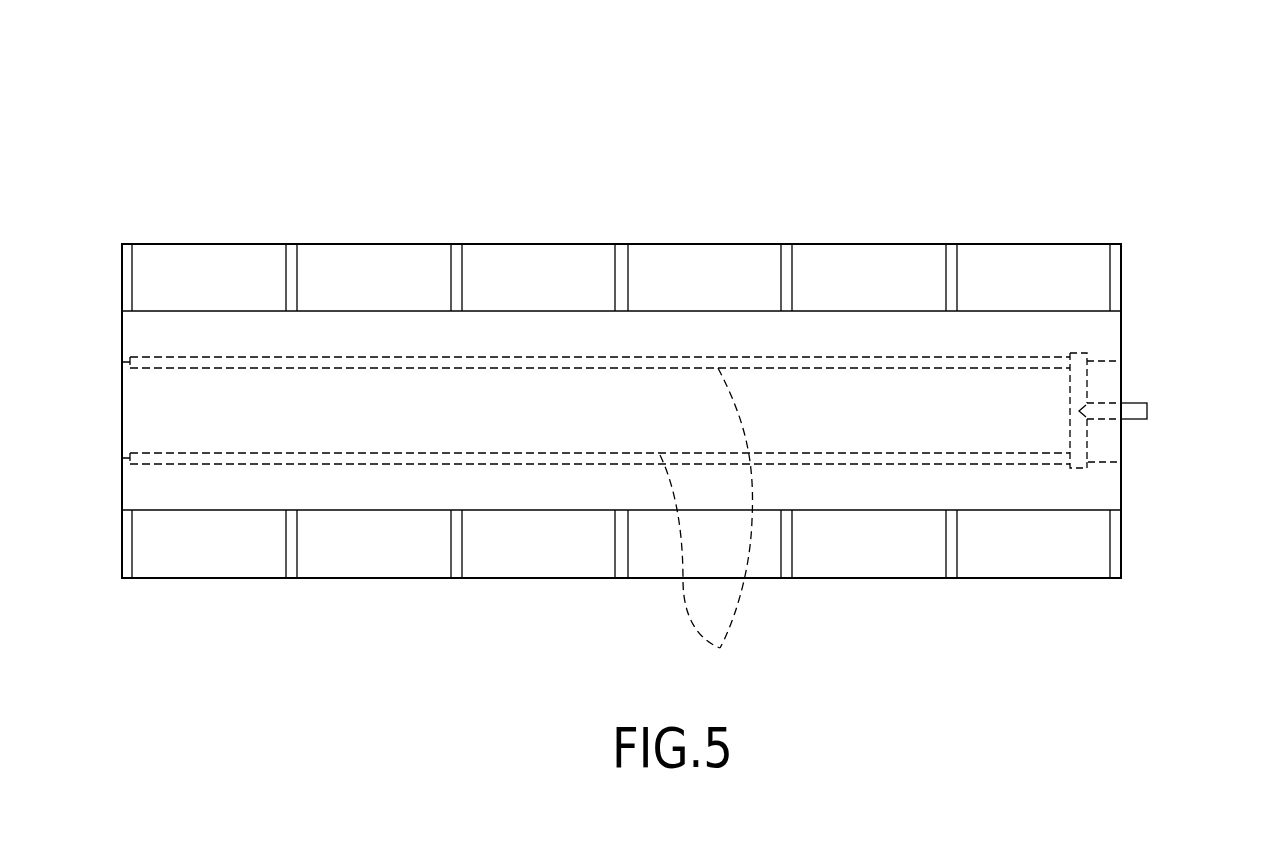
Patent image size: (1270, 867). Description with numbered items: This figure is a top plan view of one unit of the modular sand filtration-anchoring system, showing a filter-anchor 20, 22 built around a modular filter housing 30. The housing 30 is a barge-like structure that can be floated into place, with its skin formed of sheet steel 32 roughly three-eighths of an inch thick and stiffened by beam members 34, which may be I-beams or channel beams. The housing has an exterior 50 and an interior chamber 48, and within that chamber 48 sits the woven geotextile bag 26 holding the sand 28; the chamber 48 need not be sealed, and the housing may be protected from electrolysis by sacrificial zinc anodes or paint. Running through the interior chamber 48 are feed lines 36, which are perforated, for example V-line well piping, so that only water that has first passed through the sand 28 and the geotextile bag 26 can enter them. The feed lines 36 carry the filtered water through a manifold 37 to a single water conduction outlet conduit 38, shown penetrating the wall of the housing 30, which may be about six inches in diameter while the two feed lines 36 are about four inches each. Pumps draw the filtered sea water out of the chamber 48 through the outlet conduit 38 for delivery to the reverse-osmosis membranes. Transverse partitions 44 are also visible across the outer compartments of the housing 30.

The filter-anchor 20 is at (538, 140).
The filter-anchor 22 is at (621, 411).
The woven geotextile bag 26 is at (603, 478).
The sand 28 is at (693, 345).
The modular filter housing 30 is at (835, 243).
The sheet steel 32 is at (1003, 243).
The beam members 34 is at (1115, 558).
The feed line 36 is at (720, 648).
The manifold 37 is at (1083, 373).
The water conduction outlet conduit 38 is at (1130, 415).
The divider 44 is at (307, 243).
The interior chamber 48 is at (381, 345).
The exterior 50 is at (173, 243).